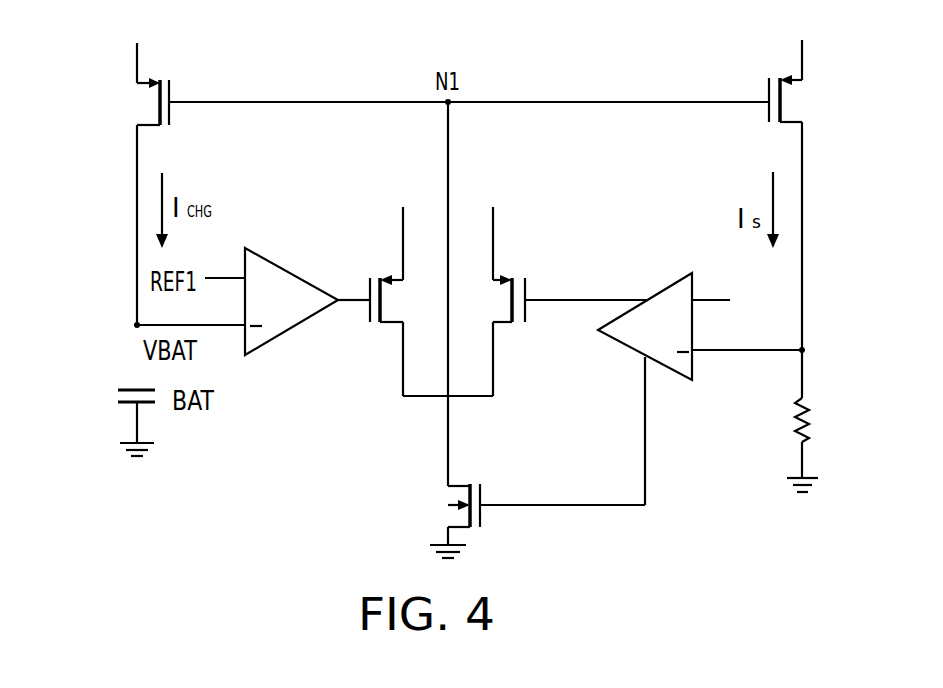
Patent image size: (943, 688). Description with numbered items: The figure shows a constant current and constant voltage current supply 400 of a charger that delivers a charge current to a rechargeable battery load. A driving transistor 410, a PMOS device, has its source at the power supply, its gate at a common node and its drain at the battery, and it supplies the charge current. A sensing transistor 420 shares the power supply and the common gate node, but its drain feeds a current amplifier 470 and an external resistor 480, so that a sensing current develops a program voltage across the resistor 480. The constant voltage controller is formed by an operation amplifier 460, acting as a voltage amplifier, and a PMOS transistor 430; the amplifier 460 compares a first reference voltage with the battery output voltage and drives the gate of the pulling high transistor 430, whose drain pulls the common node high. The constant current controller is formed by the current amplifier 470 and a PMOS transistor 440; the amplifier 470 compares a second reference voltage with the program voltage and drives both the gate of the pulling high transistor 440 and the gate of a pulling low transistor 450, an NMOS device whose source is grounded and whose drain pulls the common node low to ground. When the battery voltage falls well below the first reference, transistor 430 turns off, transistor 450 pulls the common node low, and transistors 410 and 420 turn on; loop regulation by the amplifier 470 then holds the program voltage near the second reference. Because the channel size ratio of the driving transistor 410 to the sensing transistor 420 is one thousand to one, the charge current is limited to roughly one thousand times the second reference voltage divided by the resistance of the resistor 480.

The constant current and constant voltage current supply 400 is at (833, 570).
The driving transistor 410 is at (187, 165).
The sensing transistor 420 is at (772, 202).
The PMOS transistor 430 is at (380, 284).
The PMOS transistor 440 is at (565, 284).
The pulling low transistor 450 is at (516, 521).
The operation amplifier 460 is at (293, 328).
The operation amplifier 470 is at (618, 344).
The external resistor 480 is at (785, 445).